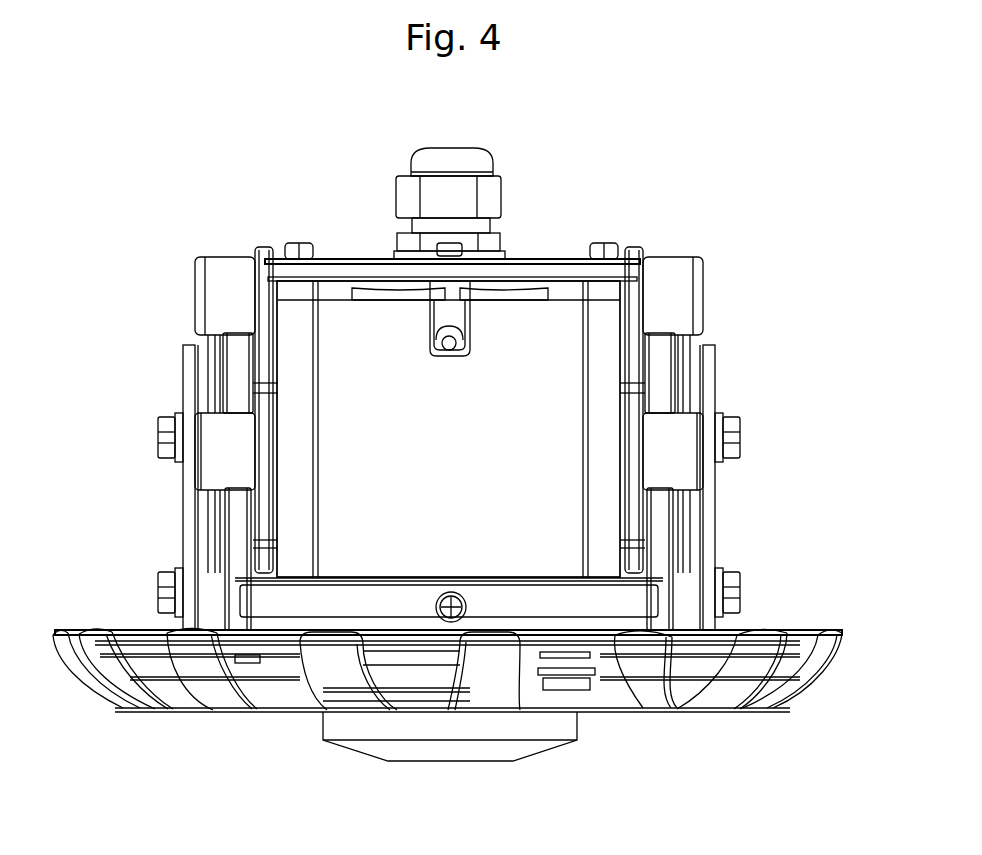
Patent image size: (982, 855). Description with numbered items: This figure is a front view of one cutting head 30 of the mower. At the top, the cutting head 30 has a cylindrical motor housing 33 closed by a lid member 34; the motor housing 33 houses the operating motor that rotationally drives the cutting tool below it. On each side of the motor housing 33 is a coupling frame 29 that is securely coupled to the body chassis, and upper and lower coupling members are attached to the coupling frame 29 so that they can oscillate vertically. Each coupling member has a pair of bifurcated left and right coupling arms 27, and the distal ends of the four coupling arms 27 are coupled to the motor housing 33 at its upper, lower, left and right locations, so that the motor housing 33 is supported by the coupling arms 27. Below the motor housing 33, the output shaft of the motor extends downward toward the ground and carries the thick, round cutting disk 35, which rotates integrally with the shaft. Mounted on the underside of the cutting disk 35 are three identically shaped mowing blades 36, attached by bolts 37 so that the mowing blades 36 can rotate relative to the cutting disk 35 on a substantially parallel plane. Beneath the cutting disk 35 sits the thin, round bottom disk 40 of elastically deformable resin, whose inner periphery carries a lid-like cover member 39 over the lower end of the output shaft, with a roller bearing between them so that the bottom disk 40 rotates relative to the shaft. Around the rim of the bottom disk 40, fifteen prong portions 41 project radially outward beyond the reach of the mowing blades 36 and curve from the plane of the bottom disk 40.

The cutting head 30 is at (798, 237).
The motor housing 33 is at (346, 380).
The lid member 34 is at (548, 262).
The coupling arms 27 is at (228, 372).
The coupling frame 29 is at (184, 393).
The cutting disk 35 is at (797, 629).
The mowing blades 36 is at (172, 678).
The bolts 37 is at (263, 662).
The cover member 39 is at (370, 756).
The bottom disk 40 is at (663, 709).
The prong portions 41 is at (828, 678).